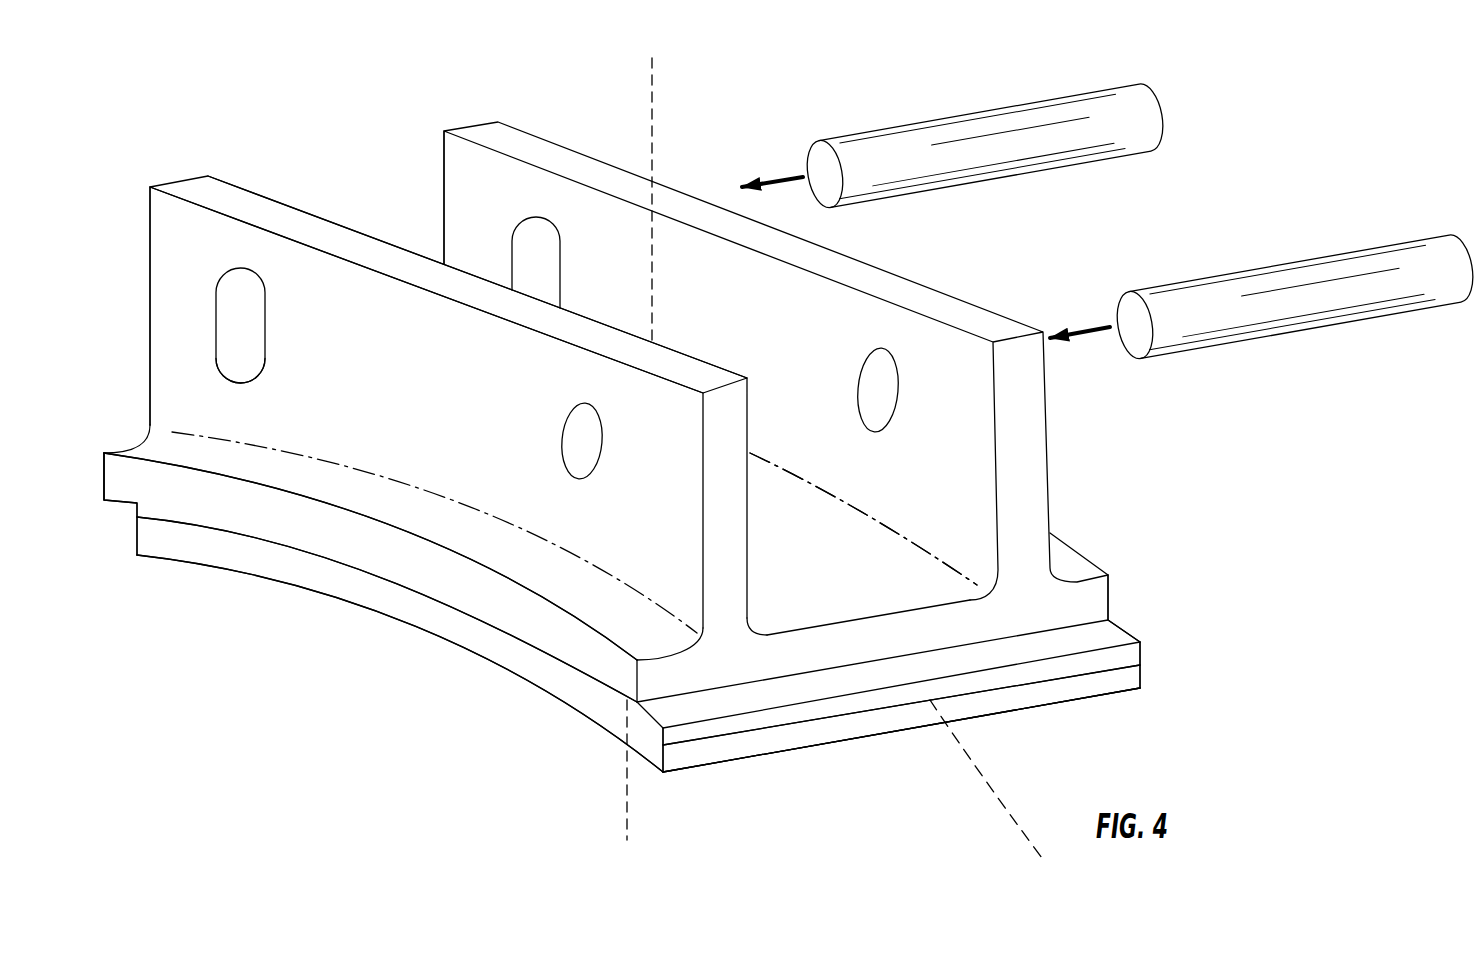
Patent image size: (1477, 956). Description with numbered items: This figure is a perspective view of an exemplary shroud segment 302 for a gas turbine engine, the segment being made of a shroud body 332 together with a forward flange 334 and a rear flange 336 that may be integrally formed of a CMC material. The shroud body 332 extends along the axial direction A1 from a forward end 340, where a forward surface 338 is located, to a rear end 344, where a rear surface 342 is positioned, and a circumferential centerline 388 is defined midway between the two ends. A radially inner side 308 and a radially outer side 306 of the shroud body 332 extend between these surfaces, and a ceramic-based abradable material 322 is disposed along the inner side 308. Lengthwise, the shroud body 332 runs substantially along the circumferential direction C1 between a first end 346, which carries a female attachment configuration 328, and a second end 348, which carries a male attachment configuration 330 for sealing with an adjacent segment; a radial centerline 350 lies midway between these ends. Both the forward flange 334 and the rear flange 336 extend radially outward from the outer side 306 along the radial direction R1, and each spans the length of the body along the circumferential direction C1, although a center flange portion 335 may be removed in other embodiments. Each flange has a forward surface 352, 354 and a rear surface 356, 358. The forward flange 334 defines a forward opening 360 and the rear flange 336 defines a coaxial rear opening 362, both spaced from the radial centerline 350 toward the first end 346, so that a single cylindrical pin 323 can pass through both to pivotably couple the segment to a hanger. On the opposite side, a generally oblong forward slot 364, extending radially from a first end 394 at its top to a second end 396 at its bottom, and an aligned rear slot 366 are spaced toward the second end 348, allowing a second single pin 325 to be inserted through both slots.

The shroud segment 302 is at (228, 113).
The radially outer side 306 is at (880, 565).
The radially inner side 308 is at (605, 738).
The ceramic-based abradable material 322 is at (310, 565).
The single pin 323 is at (1255, 272).
The single pin 325 is at (1000, 108).
The female attachment configuration 328 is at (777, 727).
The male attachment configuration 330 is at (123, 538).
The shroud body 332 is at (915, 583).
The forward flange 334 is at (175, 382).
The center flange portion 335 is at (402, 458).
The rear flange 336 is at (457, 198).
The forward surface 338 is at (280, 503).
The forward end 340 is at (707, 774).
The rear surface 342 is at (1118, 606).
The rear end 344 is at (1134, 703).
The first end 346 is at (658, 774).
The second end 348 is at (102, 528).
The radial centerline 350 is at (653, 147).
The forward surface of forward flange 352 is at (188, 293).
The forward surface of rear flange 354 is at (473, 243).
The rear surface of forward flange 356 is at (330, 218).
The rear surface of rear flange 358 is at (586, 150).
The forward opening 360 is at (587, 443).
The rear opening 362 is at (880, 390).
The forward slot 364 is at (247, 345).
The rear slot 366 is at (538, 250).
The circumferential centerline 388 is at (1005, 822).
The first end of forward slot 394 is at (238, 273).
The second end of forward slot 396 is at (248, 378).
The radial direction R1 is at (1215, 380).
The circumferential direction C1 is at (215, 648).
The axial direction A1 is at (795, 805).